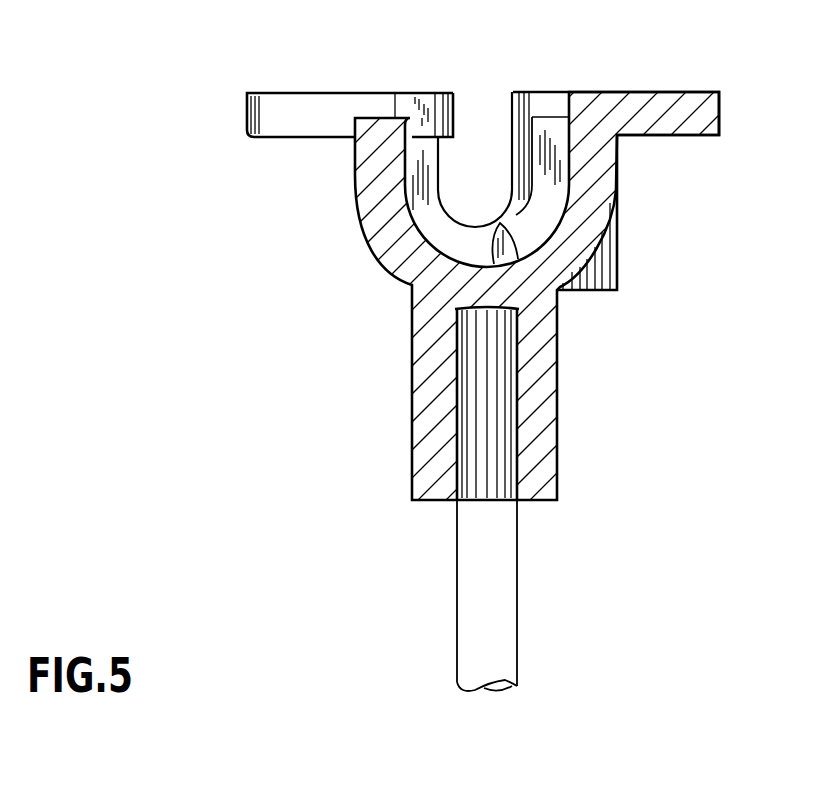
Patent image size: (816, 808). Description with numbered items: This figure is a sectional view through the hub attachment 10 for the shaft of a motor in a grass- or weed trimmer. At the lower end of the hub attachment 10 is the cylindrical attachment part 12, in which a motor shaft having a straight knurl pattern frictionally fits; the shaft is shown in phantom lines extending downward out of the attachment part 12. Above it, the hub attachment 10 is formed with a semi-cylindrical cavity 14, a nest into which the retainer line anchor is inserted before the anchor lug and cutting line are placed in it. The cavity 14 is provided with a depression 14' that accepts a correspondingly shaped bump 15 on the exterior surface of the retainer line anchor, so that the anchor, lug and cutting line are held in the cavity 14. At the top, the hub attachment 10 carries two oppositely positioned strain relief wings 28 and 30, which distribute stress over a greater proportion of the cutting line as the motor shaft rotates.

The hub attachment 10 is at (568, 395).
The cylindrical attachment part 12 is at (557, 478).
The semi-cylindrical cavity 14 is at (490, 159).
The depression 14' is at (491, 227).
The bump 15 is at (557, 298).
The strain relief wing 28 is at (688, 92).
The strain relief wing 30 is at (312, 93).